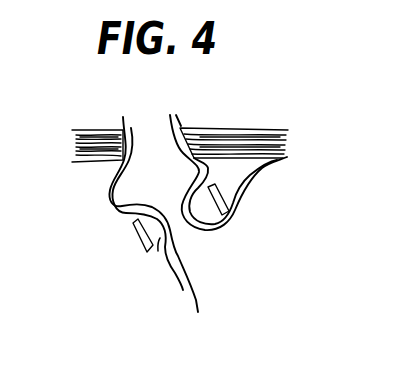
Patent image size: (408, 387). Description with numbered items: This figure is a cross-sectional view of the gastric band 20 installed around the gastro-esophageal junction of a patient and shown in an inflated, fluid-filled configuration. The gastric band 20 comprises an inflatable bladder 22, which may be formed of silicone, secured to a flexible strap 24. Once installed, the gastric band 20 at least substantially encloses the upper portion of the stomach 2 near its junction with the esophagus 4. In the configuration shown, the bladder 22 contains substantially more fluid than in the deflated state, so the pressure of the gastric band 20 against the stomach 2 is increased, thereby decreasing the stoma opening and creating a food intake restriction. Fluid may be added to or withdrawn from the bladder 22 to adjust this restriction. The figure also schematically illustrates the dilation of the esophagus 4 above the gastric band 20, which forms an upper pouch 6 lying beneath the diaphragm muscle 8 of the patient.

The stomach 2 is at (171, 231).
The esophagus 4 is at (180, 127).
The upper pouch 6 is at (105, 194).
The diaphragm muscle 8 is at (96, 130).
The gastric band 20 is at (124, 251).
The inflatable bladder 22 is at (116, 240).
The flexible strap 24 is at (150, 248).